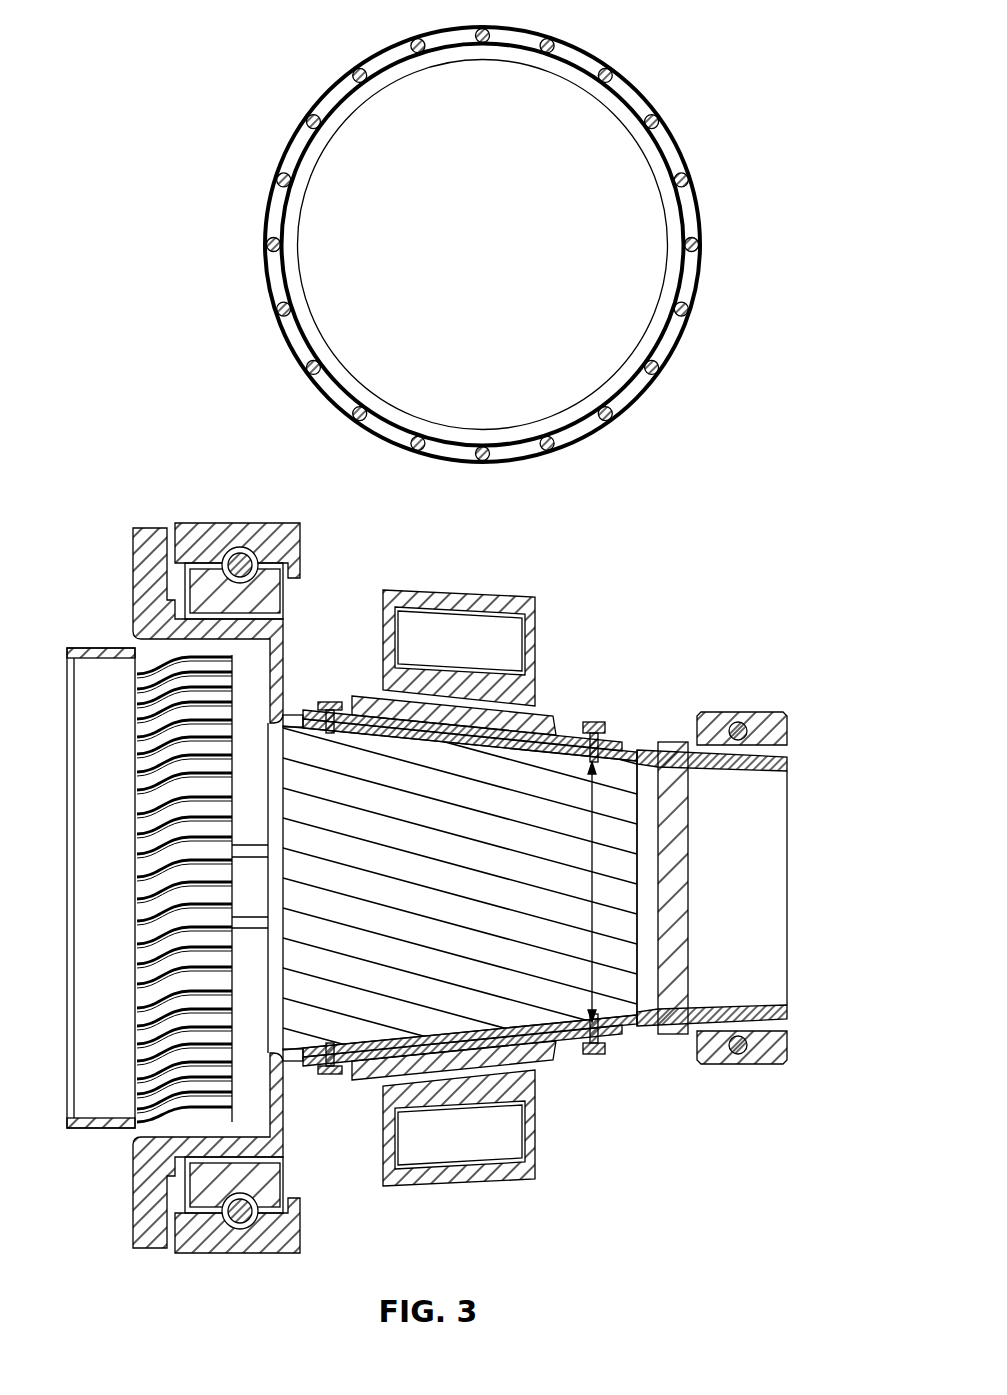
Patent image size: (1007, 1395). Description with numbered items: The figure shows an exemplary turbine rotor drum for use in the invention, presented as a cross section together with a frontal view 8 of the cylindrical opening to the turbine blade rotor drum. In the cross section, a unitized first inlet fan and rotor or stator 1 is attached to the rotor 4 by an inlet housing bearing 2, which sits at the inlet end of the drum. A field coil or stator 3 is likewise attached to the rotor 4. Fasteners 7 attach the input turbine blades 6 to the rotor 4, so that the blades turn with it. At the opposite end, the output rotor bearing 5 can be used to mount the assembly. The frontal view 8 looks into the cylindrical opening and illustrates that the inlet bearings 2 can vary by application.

The unitized first inlet fan and rotor or stator 1 is at (100, 647).
The inlet housing bearing 2 is at (197, 520).
The field coil or stator 3 is at (536, 652).
The rotor 4 is at (557, 720).
The output rotor bearing 5 is at (748, 712).
The input turbine blades 6 is at (597, 943).
The fasteners 7 is at (593, 1053).
The frontal view 8 is at (641, 96).